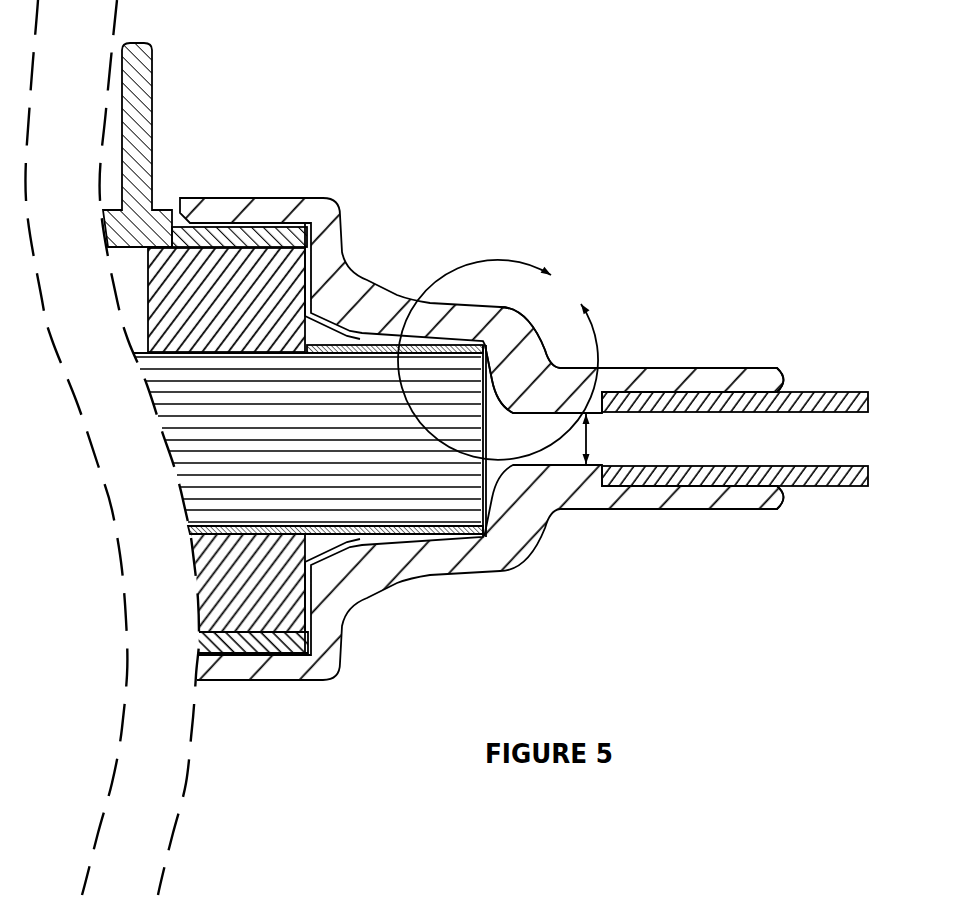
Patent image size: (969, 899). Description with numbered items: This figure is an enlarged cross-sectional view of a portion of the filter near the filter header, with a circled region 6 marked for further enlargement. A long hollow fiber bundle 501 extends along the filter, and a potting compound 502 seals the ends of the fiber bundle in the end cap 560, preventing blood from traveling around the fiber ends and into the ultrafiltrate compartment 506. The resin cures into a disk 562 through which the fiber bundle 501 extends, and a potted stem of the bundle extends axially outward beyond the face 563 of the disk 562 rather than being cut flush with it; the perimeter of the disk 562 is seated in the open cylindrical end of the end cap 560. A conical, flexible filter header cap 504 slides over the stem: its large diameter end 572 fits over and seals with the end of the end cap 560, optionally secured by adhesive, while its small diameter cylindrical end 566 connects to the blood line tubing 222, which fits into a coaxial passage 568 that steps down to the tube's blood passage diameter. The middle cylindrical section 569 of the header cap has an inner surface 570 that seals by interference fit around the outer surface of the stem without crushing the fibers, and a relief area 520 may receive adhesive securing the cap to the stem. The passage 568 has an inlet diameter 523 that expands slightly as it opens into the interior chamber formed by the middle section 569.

The hollow fiber bundle 501 is at (258, 408).
The potting compound 502 is at (318, 292).
The filter header cap 504 is at (570, 490).
The ultrafiltrate compartment 506 is at (133, 275).
The relief area 520 is at (386, 322).
The inlet diameter 523 is at (585, 458).
The end cap 560 is at (157, 215).
The disk 562 is at (213, 287).
The face of the disk 563 is at (308, 620).
The small diameter cylindrical end 566 is at (712, 392).
The passage 568 is at (720, 490).
The middle cylindrical section 569 is at (464, 340).
The inner surface 570 is at (450, 537).
The large diameter end 572 is at (220, 660).
The blood line tubing 222 is at (846, 408).
The region 6 is at (498, 360).